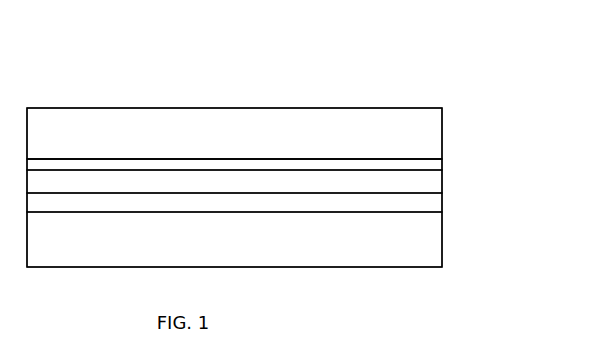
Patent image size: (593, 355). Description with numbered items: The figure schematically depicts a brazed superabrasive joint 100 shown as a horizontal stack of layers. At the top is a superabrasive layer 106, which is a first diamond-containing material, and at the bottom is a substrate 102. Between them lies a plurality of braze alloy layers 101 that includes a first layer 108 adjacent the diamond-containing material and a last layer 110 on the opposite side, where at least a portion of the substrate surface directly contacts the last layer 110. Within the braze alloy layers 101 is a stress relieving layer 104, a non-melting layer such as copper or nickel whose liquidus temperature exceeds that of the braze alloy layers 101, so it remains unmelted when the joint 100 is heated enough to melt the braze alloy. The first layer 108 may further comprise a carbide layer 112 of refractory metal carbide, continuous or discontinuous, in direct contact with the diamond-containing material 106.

The brazed superabrasive joint 100 is at (448, 90).
The braze alloy layers 101 is at (442, 181).
The substrate 102 is at (234, 239).
The stress relieving layer 104 is at (234, 181).
The superabrasive layer 106 is at (234, 133).
The first layer 108 is at (442, 163).
The last layer 110 is at (442, 205).
The carbide layer 112 is at (293, 159).